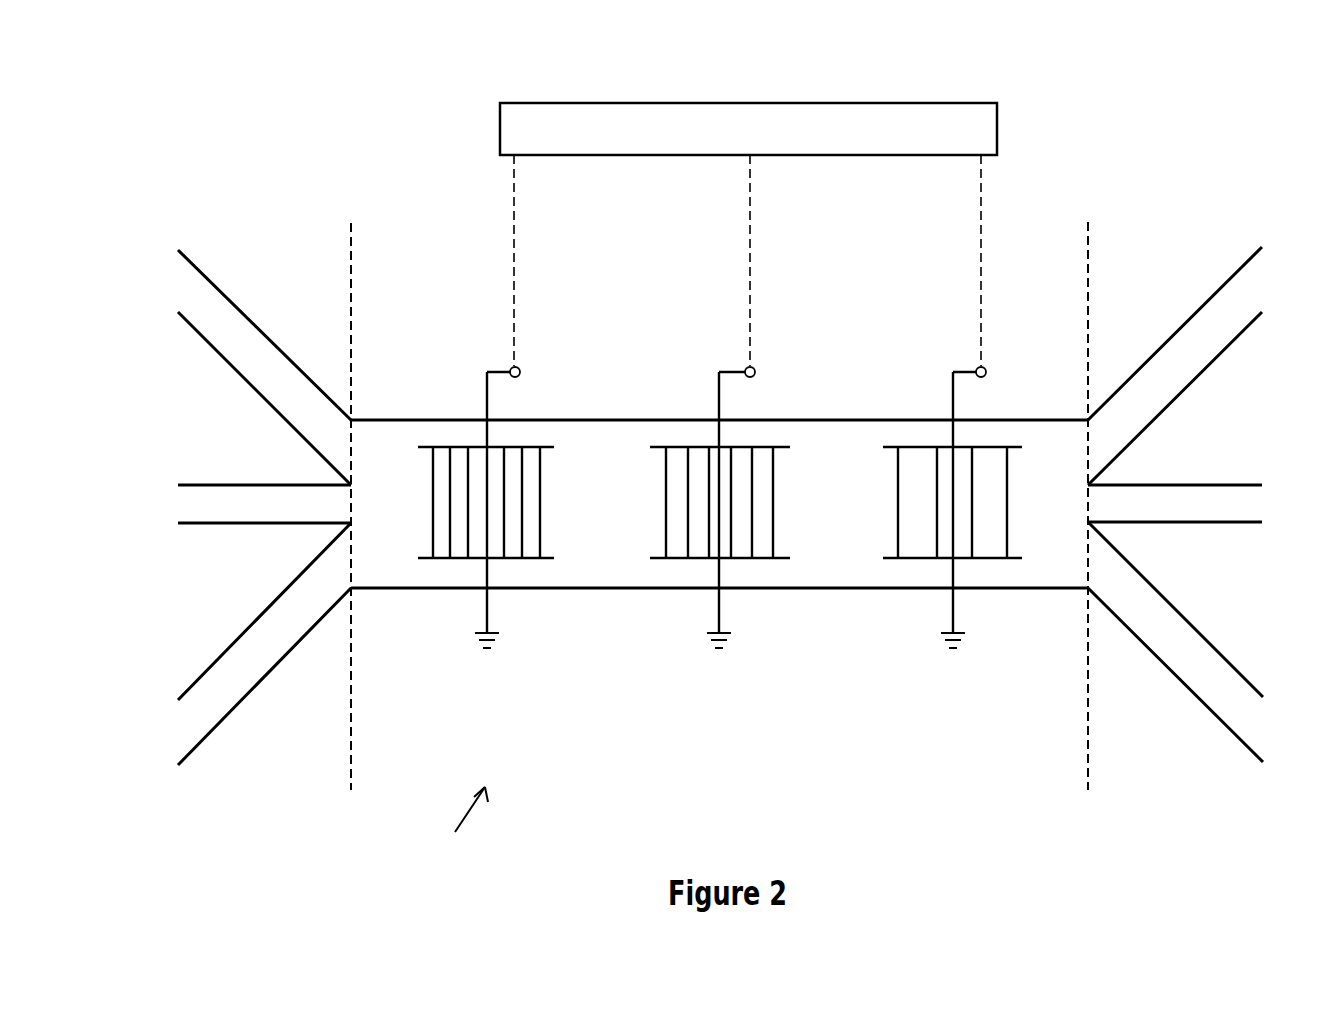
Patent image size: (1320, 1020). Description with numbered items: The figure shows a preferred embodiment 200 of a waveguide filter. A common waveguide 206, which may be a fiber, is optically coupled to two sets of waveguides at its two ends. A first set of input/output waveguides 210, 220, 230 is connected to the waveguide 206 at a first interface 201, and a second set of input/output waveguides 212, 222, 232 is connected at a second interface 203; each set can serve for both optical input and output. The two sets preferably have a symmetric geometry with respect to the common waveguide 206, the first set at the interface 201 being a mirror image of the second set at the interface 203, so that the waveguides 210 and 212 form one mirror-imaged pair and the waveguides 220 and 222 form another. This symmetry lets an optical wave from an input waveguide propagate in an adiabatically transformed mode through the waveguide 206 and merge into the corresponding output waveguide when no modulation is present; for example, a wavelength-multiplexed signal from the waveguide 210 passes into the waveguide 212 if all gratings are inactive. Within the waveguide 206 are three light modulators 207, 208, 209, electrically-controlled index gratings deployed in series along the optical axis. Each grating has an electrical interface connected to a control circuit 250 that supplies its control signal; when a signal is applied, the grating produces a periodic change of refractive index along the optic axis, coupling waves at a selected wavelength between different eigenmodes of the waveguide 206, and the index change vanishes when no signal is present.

The preferred embodiment 200 is at (447, 819).
The first interface 201 is at (353, 252).
The second interface 203 is at (1087, 252).
The waveguide 206 is at (368, 420).
The light modulator 207 is at (505, 568).
The light modulator 208 is at (745, 567).
The light modulator 209 is at (975, 567).
The input/output waveguide 210 is at (208, 275).
The input/output waveguide 212 is at (1233, 273).
The input/output waveguide 220 is at (240, 485).
The input/output waveguide 222 is at (1215, 485).
The input/output waveguide 230 is at (240, 633).
The input/output waveguide 232 is at (1200, 632).
The control circuit 250 is at (872, 103).